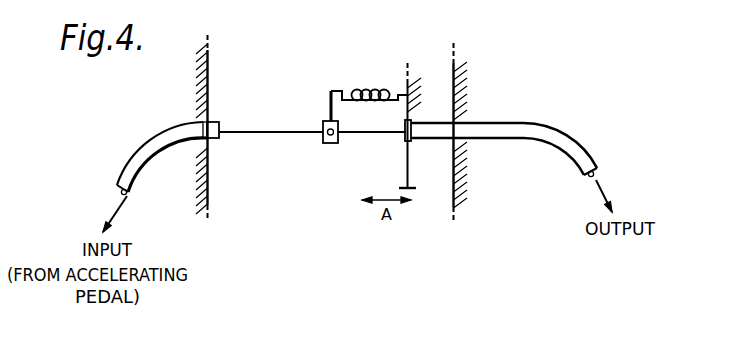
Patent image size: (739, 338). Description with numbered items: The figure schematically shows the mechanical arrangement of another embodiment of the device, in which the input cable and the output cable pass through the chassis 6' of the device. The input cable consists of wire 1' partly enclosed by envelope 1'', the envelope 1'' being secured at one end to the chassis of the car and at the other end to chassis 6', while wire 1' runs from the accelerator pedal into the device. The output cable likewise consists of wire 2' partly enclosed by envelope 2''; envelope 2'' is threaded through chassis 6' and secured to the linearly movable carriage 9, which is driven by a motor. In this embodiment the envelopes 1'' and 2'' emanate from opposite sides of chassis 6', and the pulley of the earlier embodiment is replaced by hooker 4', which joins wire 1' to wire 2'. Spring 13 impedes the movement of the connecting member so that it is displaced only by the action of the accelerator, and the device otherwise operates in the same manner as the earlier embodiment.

The chassis of the device 6' is at (331, 120).
The envelope of input cable 1'' is at (161, 177).
The wire of input cable 1' is at (271, 162).
The hooker 4' is at (307, 112).
The spring 13 is at (355, 85).
The wire of output cable 2' is at (365, 159).
The linearly movable carriage 9 is at (408, 168).
The envelope of output cable 2'' is at (508, 166).